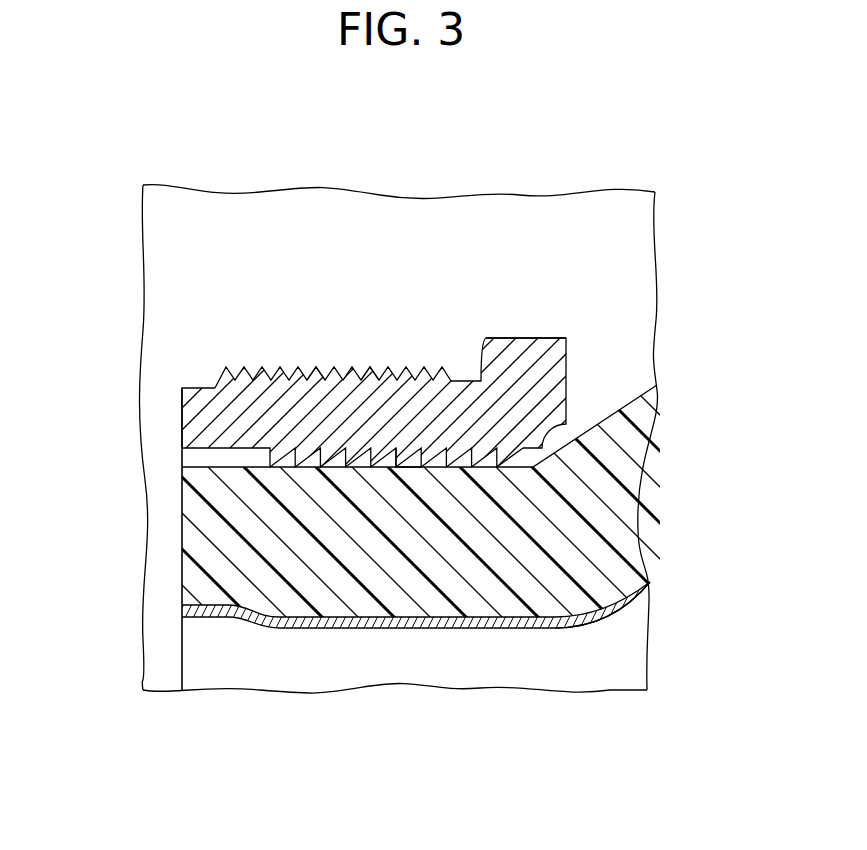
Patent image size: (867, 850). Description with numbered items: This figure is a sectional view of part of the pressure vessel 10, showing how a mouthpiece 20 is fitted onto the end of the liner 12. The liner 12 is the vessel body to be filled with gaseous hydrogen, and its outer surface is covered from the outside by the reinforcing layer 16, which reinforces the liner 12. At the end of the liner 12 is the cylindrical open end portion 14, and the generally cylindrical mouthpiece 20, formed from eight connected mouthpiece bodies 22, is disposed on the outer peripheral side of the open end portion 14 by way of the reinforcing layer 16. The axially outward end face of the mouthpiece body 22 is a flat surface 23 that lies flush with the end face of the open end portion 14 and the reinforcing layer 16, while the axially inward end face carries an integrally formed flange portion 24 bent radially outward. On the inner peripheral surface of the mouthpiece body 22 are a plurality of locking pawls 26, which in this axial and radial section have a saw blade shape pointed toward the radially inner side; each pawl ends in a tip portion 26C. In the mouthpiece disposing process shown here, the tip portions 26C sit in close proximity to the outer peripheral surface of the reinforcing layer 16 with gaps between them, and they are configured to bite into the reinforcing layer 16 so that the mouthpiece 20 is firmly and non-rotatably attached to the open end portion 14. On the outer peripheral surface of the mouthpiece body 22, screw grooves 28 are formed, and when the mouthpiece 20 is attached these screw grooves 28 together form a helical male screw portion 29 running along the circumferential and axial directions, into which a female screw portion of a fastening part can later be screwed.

The pressure vessel 10 is at (668, 262).
The liner 12 is at (584, 628).
The open end portion 14 is at (241, 623).
The reinforcing layer 16 is at (195, 511).
The mouthpiece 20 is at (536, 334).
The mouthpiece body 22 is at (275, 386).
The flat surface 23 is at (182, 417).
The flange portion 24 is at (517, 338).
The locking pawl 26 is at (409, 478).
The tip portion 26C is at (386, 466).
The screw groove 28 is at (325, 378).
The male screw portion 29 is at (370, 370).